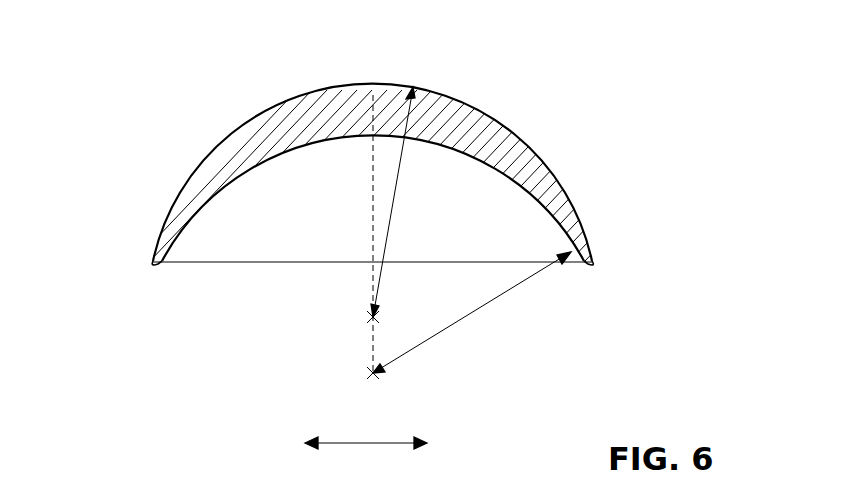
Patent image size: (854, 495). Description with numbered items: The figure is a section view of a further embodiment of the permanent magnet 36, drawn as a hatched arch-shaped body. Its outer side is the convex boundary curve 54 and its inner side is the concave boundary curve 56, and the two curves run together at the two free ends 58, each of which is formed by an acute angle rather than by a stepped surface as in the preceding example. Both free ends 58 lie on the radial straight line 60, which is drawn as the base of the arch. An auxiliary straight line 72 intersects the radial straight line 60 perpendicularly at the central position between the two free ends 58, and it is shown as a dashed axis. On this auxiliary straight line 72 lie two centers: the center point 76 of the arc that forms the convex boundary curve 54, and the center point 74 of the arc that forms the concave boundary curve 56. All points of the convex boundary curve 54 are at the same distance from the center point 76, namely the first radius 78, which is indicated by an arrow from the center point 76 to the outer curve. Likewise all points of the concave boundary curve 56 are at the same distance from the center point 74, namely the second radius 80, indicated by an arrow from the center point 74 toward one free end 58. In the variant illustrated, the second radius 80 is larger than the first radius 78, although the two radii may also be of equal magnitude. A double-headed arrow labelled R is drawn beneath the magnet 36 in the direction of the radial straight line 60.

The permanent magnet 36 is at (429, 169).
The convex boundary curve 54 is at (342, 88).
The concave boundary curve 56 is at (468, 153).
The free ends 58 is at (152, 256).
The radial straight line 60 is at (226, 264).
The auxiliary straight line 72 is at (371, 243).
The center point 74 is at (371, 374).
The centre point 76 is at (371, 318).
The first radius 78 is at (405, 150).
The second radius 80 is at (491, 307).
The radial direction R is at (362, 446).